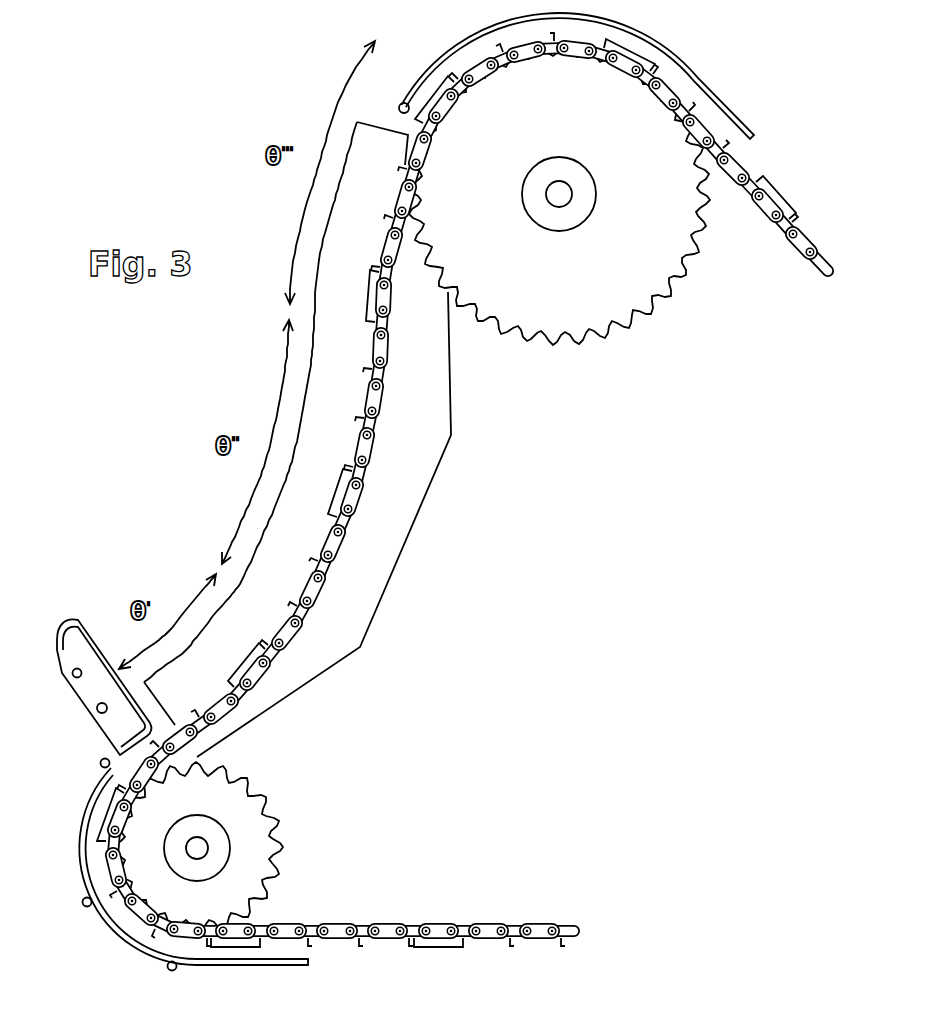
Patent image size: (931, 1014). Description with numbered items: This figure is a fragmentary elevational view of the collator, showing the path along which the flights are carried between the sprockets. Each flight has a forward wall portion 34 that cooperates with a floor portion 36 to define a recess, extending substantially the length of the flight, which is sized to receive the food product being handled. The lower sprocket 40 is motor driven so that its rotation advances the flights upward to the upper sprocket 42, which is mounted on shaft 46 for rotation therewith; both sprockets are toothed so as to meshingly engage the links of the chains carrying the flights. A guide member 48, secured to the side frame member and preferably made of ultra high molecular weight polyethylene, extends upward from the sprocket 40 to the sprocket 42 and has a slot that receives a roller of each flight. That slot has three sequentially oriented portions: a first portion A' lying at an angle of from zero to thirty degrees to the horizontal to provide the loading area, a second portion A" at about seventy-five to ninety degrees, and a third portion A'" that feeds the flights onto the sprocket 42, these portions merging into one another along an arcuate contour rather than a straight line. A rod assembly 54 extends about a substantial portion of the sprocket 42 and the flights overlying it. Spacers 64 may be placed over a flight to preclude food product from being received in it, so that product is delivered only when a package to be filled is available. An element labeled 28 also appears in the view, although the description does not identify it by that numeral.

The conveyor chain 28 is at (462, 523).
The forward wall portion 34 is at (199, 708).
The floor portion 36 is at (173, 723).
The sprocket 40 is at (262, 838).
The sprocket 42 is at (603, 308).
The shaft 46 is at (566, 195).
The guide member 48 is at (425, 461).
The rod assembly 54 is at (627, 30).
The spacer 64 is at (243, 658).